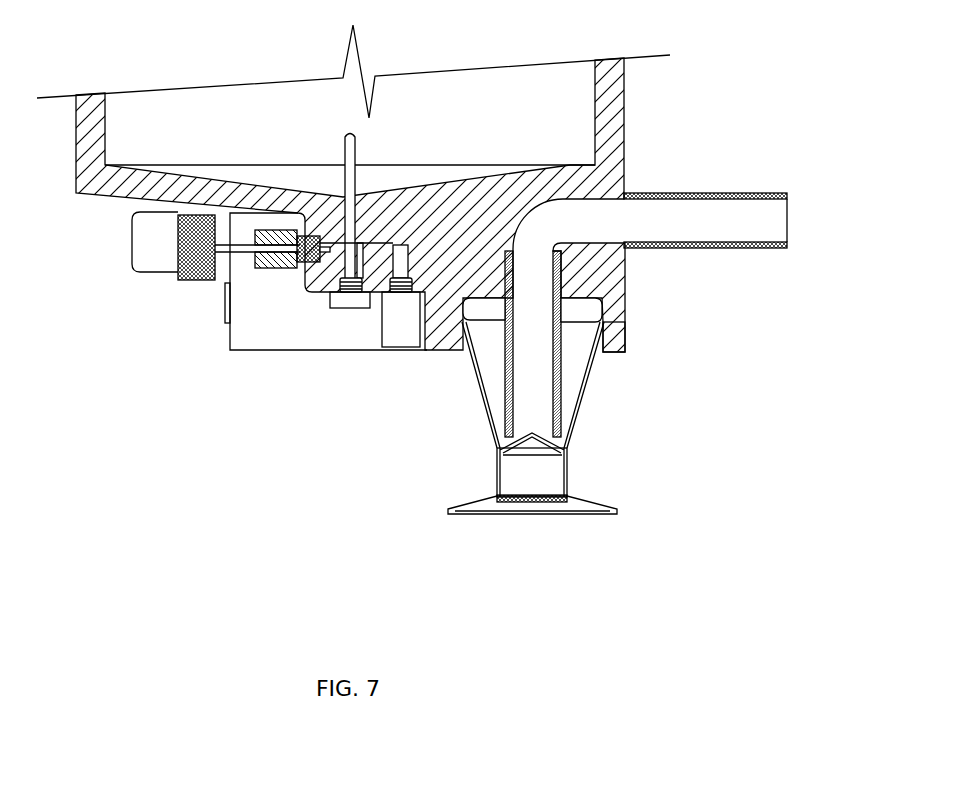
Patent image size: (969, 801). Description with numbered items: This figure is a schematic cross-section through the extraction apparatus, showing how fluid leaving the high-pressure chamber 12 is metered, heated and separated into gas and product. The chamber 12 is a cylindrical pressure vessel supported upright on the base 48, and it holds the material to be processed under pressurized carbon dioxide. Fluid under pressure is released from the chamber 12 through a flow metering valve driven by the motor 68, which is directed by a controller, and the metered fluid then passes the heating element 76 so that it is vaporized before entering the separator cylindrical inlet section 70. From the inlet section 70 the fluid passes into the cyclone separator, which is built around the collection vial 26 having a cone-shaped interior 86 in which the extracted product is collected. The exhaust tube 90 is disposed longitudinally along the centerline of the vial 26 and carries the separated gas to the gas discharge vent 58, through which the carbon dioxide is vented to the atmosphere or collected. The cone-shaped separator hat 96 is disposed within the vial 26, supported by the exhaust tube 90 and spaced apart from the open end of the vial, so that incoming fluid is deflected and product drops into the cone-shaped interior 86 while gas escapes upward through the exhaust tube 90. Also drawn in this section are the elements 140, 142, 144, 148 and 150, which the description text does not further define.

The high-pressure chamber 12 is at (397, 188).
The collection vial 26 is at (581, 385).
The base 48 is at (133, 270).
The gas discharge vent 58 is at (743, 195).
The motor 68 is at (108, 242).
The separator cylindrical inlet section 70 is at (659, 303).
The heating element 76 is at (241, 297).
The cone-shaped interior 86 is at (513, 531).
The exhaust tube 90 is at (628, 352).
The cone-shaped separator hat 96 is at (589, 469).
The rod 140 is at (471, 140).
The block 142 is at (347, 371).
The passage 144 is at (251, 148).
The flange leg 148 is at (680, 343).
The gasket 150 is at (396, 417).